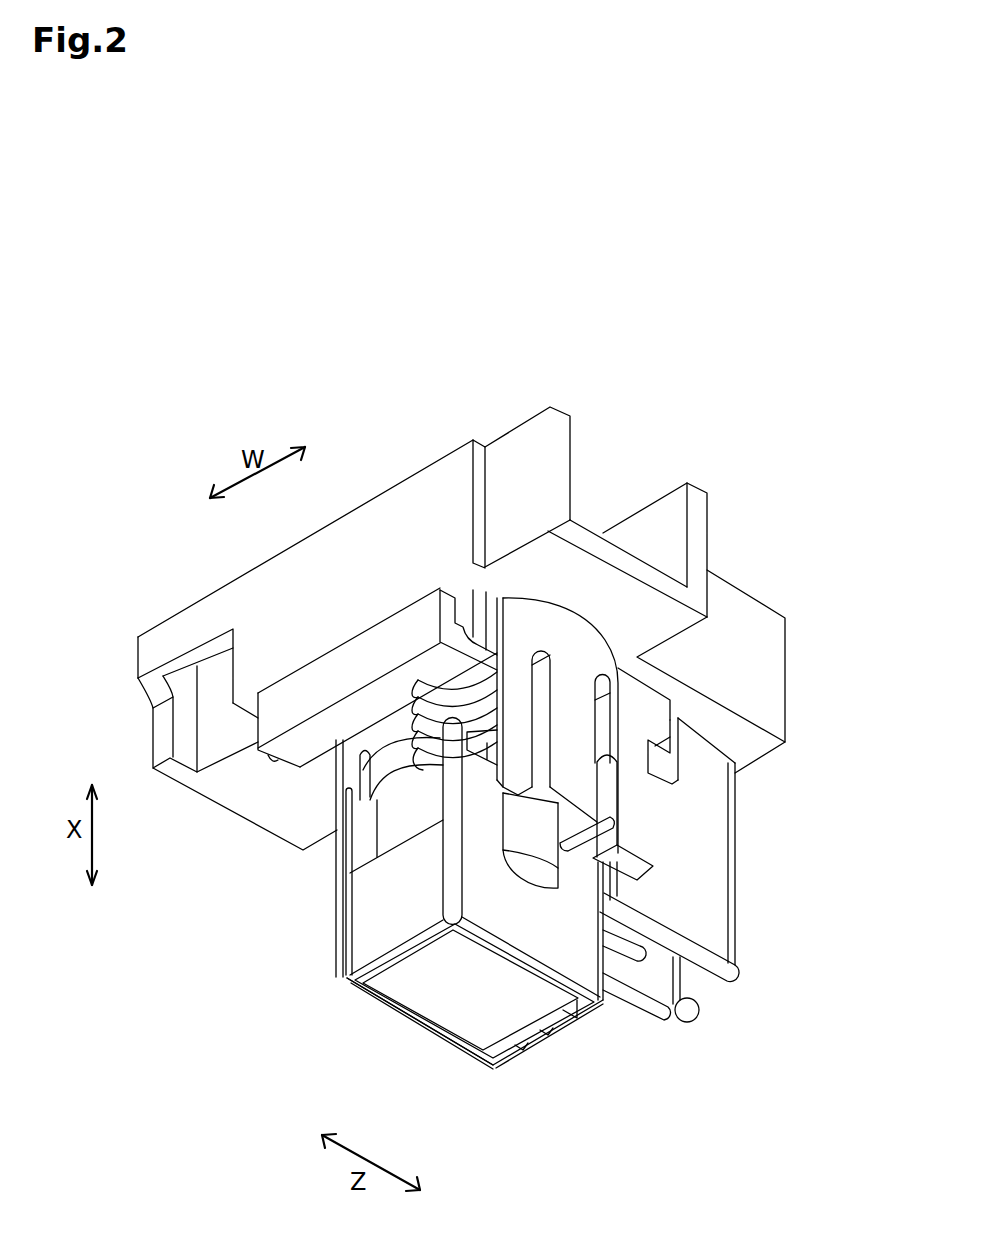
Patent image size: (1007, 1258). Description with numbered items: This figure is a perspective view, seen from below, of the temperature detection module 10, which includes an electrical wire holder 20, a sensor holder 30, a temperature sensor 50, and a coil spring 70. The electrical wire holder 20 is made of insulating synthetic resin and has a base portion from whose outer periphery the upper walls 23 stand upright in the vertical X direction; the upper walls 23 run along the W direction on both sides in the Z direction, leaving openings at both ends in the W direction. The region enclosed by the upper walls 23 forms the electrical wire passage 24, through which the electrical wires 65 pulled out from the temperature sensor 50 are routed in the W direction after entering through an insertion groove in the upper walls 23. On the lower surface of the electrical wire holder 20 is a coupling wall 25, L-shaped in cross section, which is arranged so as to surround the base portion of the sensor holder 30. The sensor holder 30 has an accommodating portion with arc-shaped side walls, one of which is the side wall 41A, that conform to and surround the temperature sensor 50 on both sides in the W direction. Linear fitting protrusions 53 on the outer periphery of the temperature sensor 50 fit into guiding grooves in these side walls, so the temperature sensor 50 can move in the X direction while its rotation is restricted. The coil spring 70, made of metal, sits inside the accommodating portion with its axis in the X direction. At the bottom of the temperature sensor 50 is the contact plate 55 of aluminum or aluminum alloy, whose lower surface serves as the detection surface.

The temperature detection module 10 is at (143, 550).
The electrical wire holder 20 is at (165, 783).
The upper walls 23 is at (347, 550).
The electrical wire passage 24 is at (598, 508).
The coupling wall 25 is at (295, 742).
The sensor holder 30 is at (608, 625).
The side wall 41A is at (578, 718).
The fitting protrusion 53 is at (608, 792).
The temperature sensor 50 is at (363, 918).
The contact plate 55 is at (465, 1012).
The electrical wires 65 is at (653, 1003).
The coil spring 70 is at (385, 740).